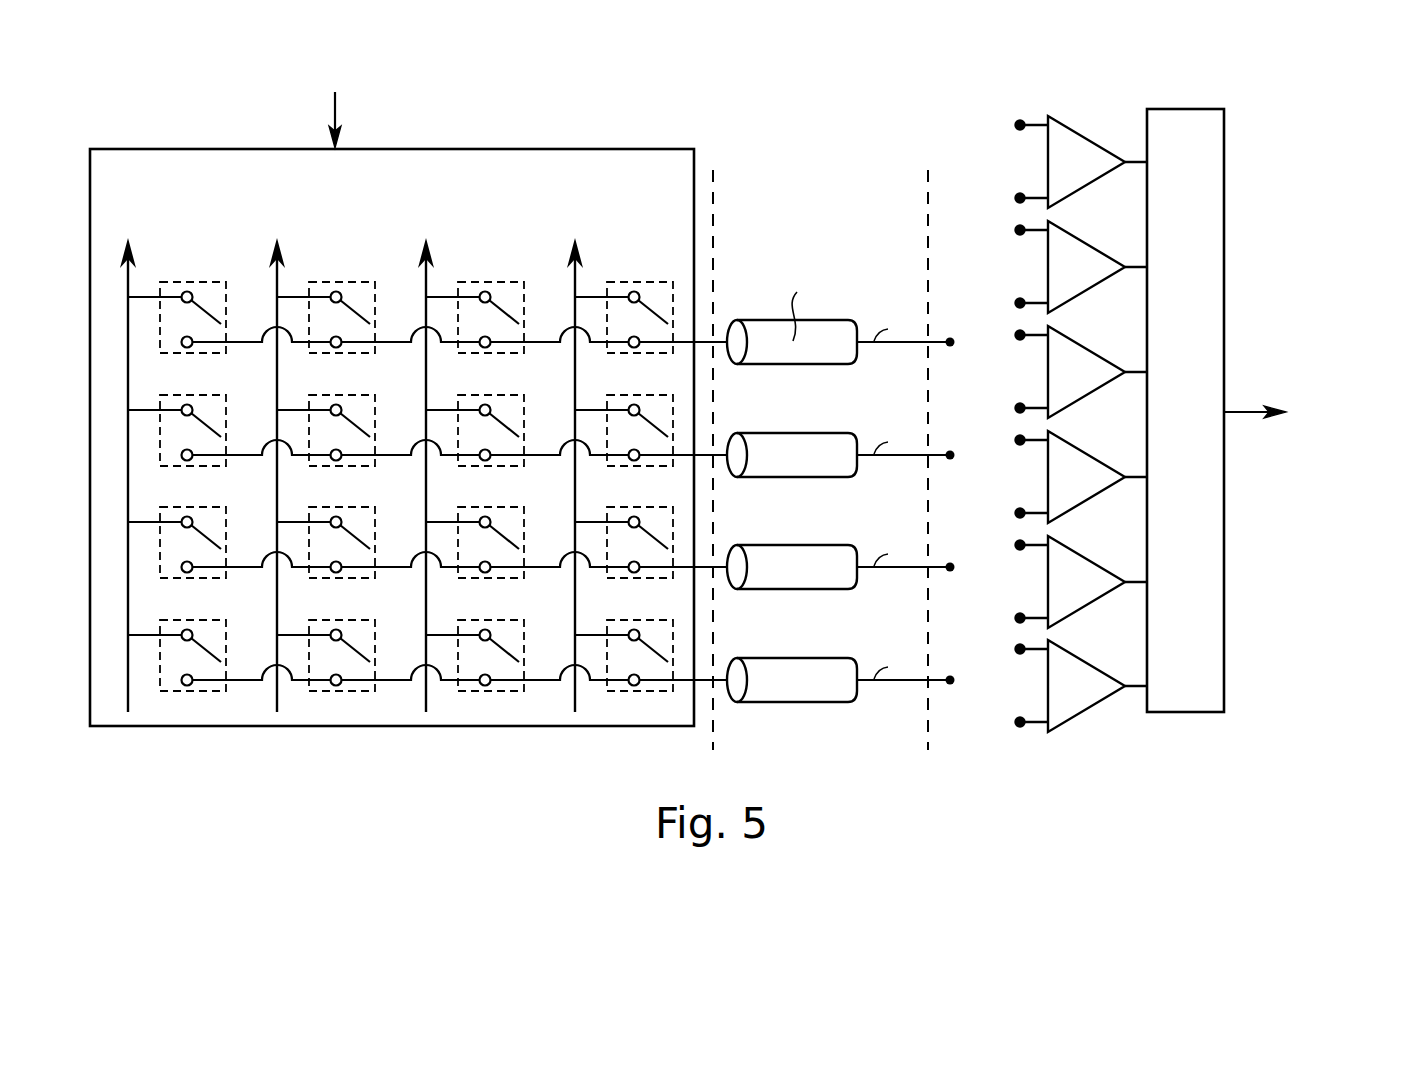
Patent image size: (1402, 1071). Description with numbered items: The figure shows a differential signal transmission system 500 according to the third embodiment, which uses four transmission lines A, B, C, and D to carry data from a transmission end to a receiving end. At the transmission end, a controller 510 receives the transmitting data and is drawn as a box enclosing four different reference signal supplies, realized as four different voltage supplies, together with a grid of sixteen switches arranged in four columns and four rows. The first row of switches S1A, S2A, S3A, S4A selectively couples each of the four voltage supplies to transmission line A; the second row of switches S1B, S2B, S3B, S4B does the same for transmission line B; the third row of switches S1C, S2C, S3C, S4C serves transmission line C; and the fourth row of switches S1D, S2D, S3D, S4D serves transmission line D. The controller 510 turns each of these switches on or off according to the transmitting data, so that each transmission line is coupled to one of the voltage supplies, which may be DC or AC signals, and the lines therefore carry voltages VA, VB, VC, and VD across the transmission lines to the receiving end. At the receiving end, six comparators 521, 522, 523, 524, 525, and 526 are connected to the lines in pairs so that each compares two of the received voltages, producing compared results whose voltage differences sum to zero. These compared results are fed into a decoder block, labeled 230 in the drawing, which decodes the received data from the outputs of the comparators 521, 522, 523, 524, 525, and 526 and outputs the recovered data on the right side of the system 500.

The differential signal transmission system 500 is at (1173, 732).
The controller 510 is at (643, 150).
The comparator 521 is at (1090, 174).
The comparator 522 is at (1090, 279).
The comparator 523 is at (1090, 384).
The comparator 524 is at (1090, 489).
The comparator 525 is at (1090, 594).
The comparator 526 is at (1090, 698).
The decoder 230 is at (1204, 423).
The switch S1A is at (185, 284).
The switch S2A is at (334, 284).
The switch S3A is at (483, 284).
The switch S4A is at (632, 284).
The switch S1B is at (185, 397).
The switch S2B is at (334, 397).
The switch S3B is at (483, 397).
The switch S4B is at (632, 397).
The switch S1C is at (185, 509).
The switch S2C is at (334, 509).
The switch S3C is at (483, 509).
The switch S4C is at (632, 509).
The switch S1D is at (185, 622).
The switch S2D is at (334, 622).
The switch S3D is at (483, 622).
The switch S4D is at (632, 622).